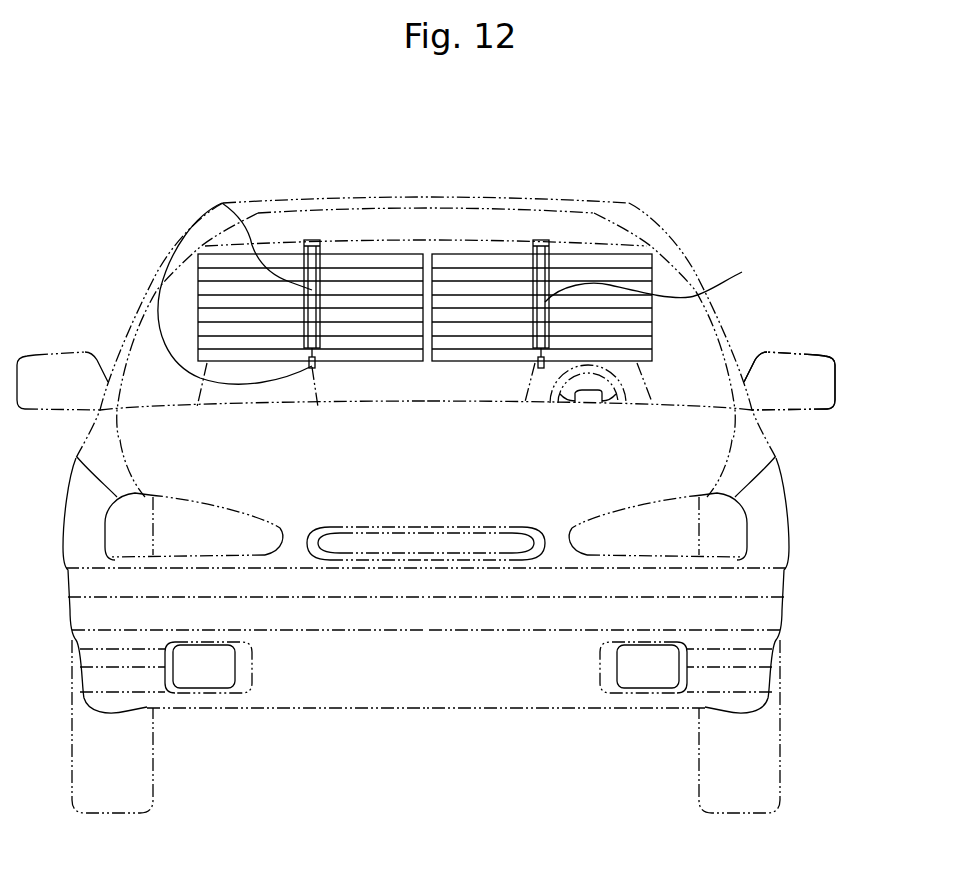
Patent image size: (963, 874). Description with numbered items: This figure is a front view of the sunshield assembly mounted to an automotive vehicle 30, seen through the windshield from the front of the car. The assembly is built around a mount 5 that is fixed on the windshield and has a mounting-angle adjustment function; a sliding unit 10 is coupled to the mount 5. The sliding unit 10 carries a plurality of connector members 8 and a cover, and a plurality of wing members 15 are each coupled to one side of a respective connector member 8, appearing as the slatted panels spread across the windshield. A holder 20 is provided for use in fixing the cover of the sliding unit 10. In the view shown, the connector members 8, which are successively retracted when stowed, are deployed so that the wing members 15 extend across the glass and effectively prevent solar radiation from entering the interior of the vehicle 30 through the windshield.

The mount 5 is at (318, 243).
The connector member 8 is at (651, 274).
The sliding unit 10 is at (222, 203).
The wing member 15 is at (610, 262).
The holder 20 is at (157, 307).
The automotive vehicle 30 is at (838, 353).